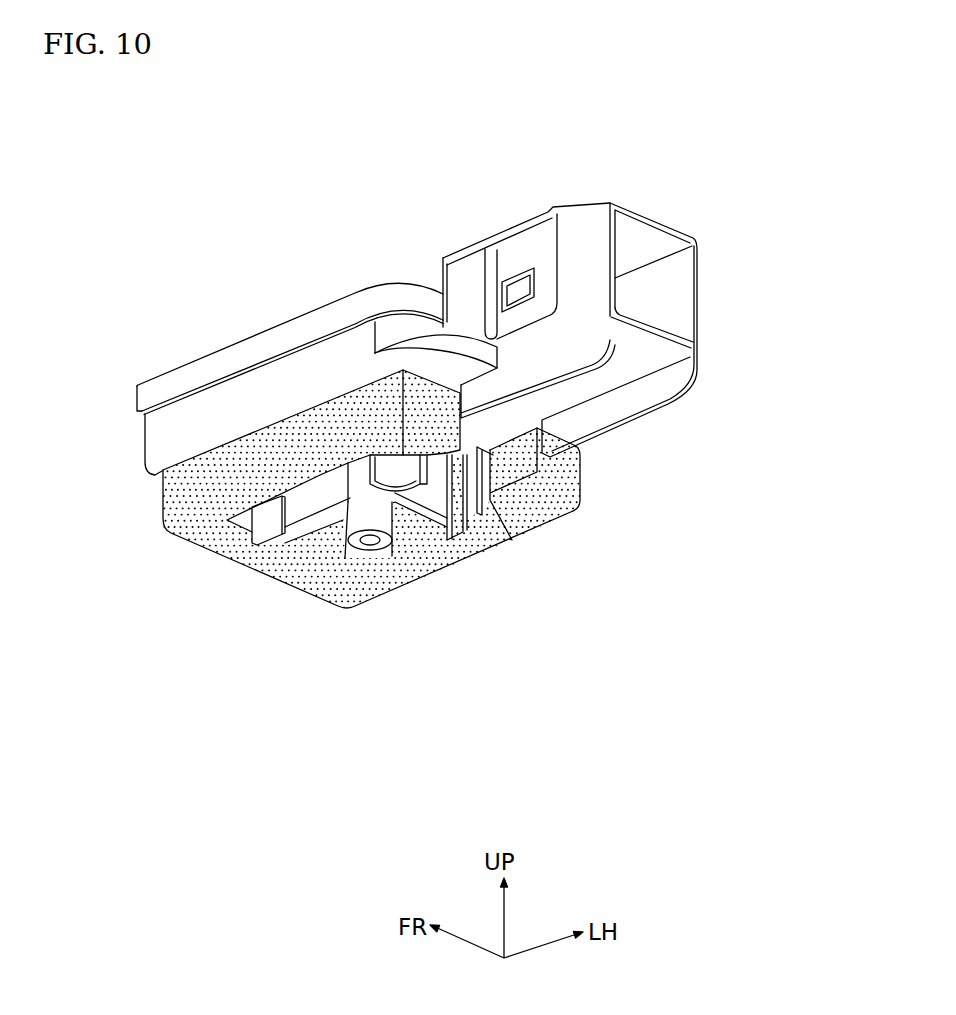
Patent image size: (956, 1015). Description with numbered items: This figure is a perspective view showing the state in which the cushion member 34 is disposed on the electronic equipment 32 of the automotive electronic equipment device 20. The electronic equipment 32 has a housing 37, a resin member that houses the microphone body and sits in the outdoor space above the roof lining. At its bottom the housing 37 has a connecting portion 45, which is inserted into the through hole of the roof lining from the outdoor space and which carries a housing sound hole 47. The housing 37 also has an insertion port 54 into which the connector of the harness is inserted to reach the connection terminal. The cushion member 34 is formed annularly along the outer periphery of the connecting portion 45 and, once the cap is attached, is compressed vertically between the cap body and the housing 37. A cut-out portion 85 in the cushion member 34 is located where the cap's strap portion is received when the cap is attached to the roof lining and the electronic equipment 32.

The electronic equipment device 20 is at (425, 206).
The electronic equipment 32 is at (343, 287).
The cushion member 34 is at (250, 457).
The housing 37 is at (281, 325).
The connecting portion 45 is at (256, 533).
The housing sound hole 47 is at (371, 545).
The insertion port 54 is at (581, 246).
The cut-out portion 85 is at (520, 466).